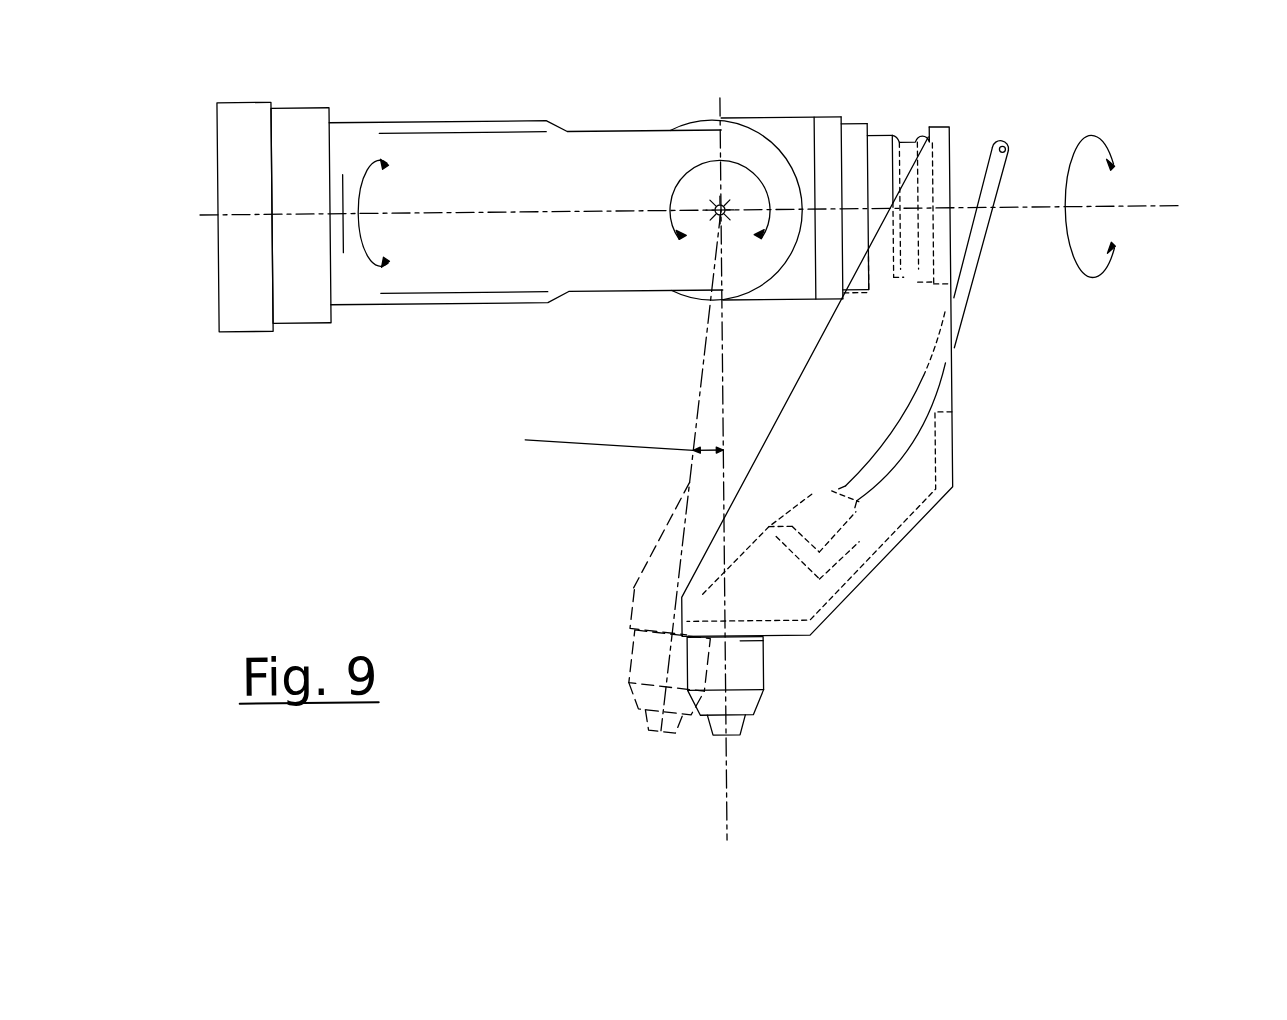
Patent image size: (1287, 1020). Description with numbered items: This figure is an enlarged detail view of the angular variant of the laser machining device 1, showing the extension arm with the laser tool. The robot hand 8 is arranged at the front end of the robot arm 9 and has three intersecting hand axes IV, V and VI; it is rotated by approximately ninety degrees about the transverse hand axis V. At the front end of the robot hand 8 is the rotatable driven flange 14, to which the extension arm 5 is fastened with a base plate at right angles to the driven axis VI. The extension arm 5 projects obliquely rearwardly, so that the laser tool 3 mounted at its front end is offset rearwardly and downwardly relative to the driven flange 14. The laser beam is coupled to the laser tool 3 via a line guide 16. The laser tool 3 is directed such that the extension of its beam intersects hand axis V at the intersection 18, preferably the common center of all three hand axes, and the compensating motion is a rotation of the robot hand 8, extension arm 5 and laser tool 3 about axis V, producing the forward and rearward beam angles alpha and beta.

The laser machining device 1 is at (984, 366).
The laser tool 3 is at (632, 649).
The extension arm 5 is at (910, 490).
The robot hand 8 is at (518, 163).
The robot arm 9 is at (259, 289).
The driven flange 14 is at (923, 141).
The line guide 16 is at (958, 286).
The intersection 18 is at (755, 168).